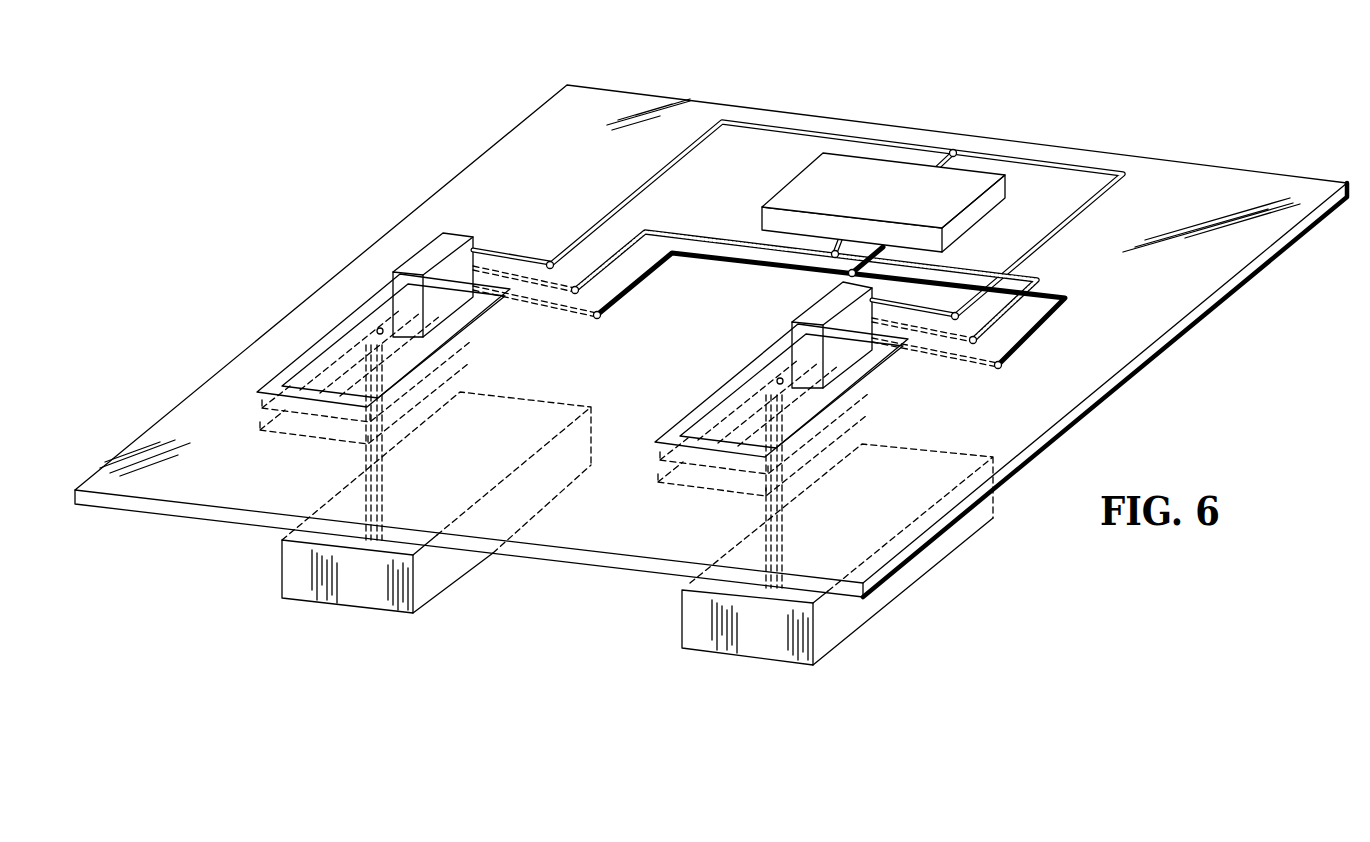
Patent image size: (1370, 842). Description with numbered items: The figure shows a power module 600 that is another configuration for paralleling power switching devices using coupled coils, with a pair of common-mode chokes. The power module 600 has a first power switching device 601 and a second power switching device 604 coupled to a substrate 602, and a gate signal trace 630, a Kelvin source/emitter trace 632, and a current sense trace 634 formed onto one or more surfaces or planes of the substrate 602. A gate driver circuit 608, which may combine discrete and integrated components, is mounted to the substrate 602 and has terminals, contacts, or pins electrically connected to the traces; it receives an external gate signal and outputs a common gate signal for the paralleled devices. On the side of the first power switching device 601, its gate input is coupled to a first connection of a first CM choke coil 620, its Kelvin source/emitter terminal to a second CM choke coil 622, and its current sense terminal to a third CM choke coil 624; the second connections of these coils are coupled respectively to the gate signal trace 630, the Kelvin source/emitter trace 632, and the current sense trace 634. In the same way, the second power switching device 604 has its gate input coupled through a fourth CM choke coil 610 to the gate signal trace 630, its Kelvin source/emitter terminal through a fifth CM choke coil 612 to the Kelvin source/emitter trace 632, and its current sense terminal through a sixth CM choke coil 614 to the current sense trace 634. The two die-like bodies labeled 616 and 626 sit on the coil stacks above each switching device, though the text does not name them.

The power module 600 is at (376, 70).
The first power switching device 601 is at (682, 625).
The substrate 602 is at (987, 135).
The second power switching device 604 is at (282, 568).
The gate driver circuit 608 is at (897, 162).
The fourth CM choke coil 610 is at (267, 385).
The fifth CM choke coil 612 is at (260, 398).
The sixth CM choke coil 614 is at (260, 420).
The first transistor die 616 is at (450, 285).
The first CM choke coil 620 is at (733, 375).
The second CM choke coil 622 is at (657, 460).
The third CM choke coil 624 is at (670, 488).
The second transistor die 626 is at (847, 333).
The gate signal trace 630 is at (783, 130).
The Kelvin source/emitter trace 632 is at (744, 242).
The current sense trace 634 is at (758, 262).